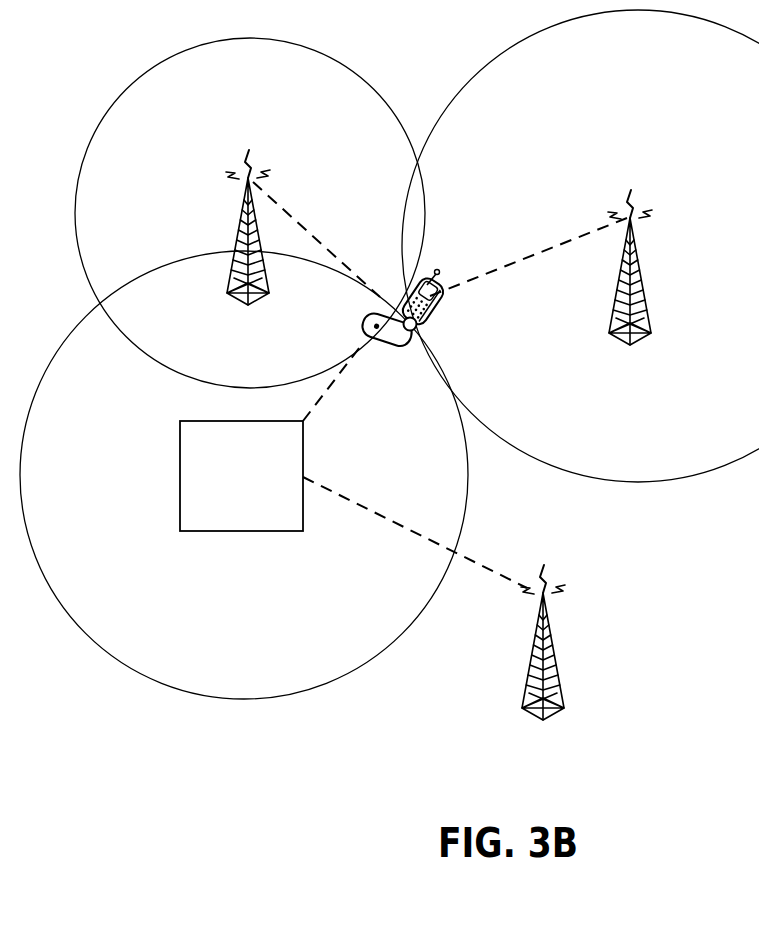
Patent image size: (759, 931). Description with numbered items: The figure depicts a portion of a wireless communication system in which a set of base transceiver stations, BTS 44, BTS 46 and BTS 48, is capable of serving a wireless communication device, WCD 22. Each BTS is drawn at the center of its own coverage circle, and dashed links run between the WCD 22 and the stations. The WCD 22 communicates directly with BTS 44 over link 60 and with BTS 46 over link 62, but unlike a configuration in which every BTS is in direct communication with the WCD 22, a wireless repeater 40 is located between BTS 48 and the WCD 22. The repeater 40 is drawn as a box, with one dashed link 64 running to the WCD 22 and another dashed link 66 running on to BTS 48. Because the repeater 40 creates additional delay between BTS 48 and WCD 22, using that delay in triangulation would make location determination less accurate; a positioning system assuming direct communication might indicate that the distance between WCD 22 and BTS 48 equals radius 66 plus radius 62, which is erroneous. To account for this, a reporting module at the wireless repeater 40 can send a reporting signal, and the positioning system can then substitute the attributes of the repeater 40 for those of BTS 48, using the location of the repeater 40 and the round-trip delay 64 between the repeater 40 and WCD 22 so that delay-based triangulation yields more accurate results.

The WCD 22 is at (418, 337).
The wireless repeater 40 is at (303, 525).
The BTS 44 is at (255, 207).
The BTS 46 is at (637, 250).
The BTS 48 is at (548, 600).
The wireless link between BTS 44 and mobile station 60 is at (302, 218).
The radius 62 is at (508, 273).
The round-trip delay 64 is at (333, 393).
The radius 66 is at (494, 557).